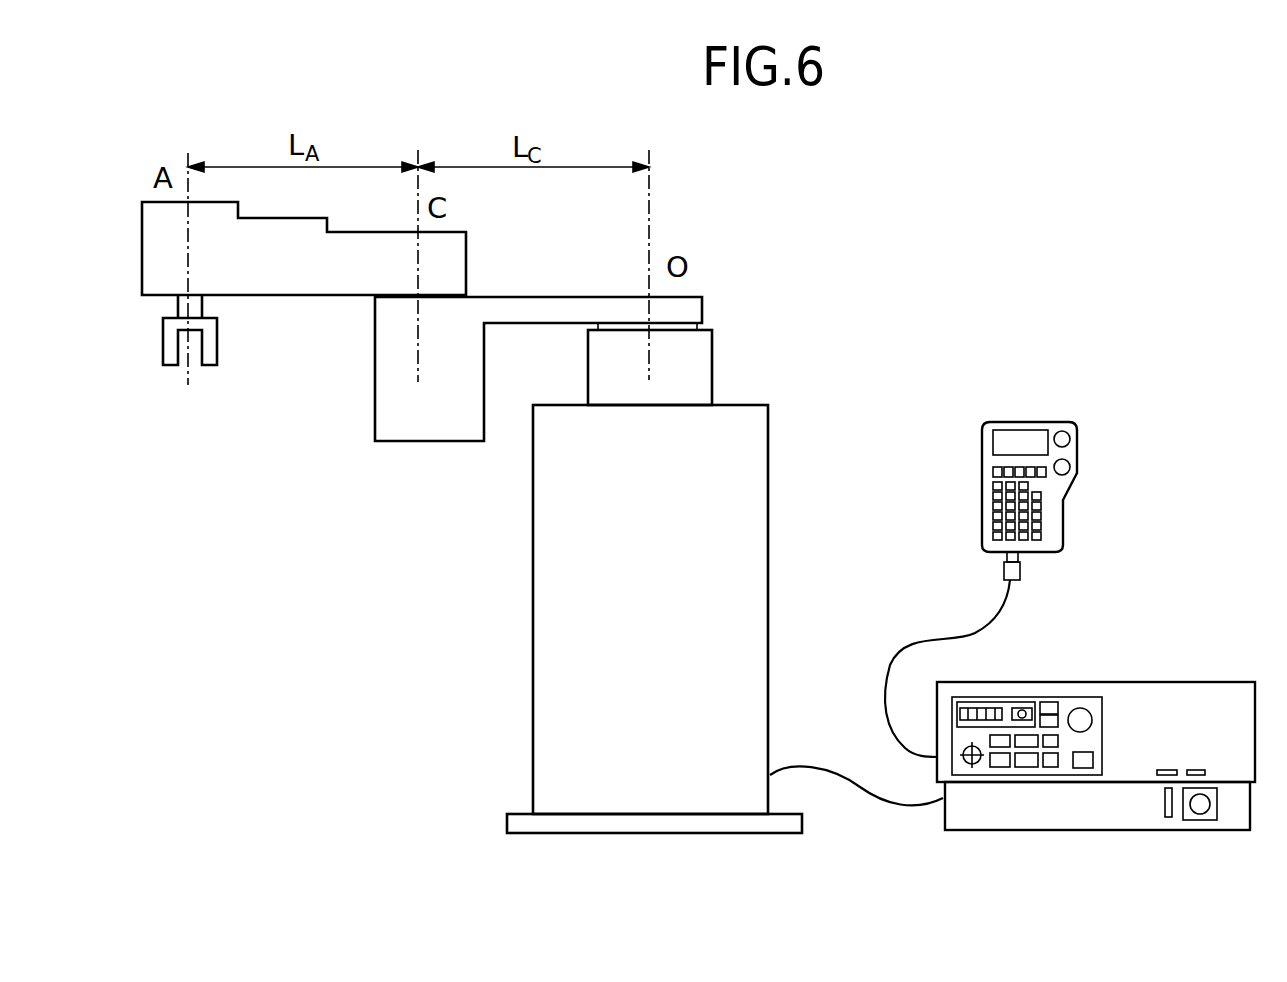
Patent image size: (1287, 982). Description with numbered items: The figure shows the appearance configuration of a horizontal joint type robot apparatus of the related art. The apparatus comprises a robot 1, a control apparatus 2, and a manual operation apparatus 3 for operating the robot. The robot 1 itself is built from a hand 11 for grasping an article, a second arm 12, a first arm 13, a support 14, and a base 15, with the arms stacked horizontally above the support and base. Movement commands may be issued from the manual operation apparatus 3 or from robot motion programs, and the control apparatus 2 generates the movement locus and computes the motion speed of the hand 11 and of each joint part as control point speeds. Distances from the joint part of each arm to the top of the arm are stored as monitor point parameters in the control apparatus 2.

The robot 1 is at (232, 658).
The control apparatus 2 is at (1140, 682).
The manual operation apparatus 3 is at (1067, 505).
The hand 11 is at (175, 367).
The second arm 12 is at (294, 296).
The first arm 13 is at (568, 297).
The support 14 is at (705, 367).
The base 15 is at (534, 626).